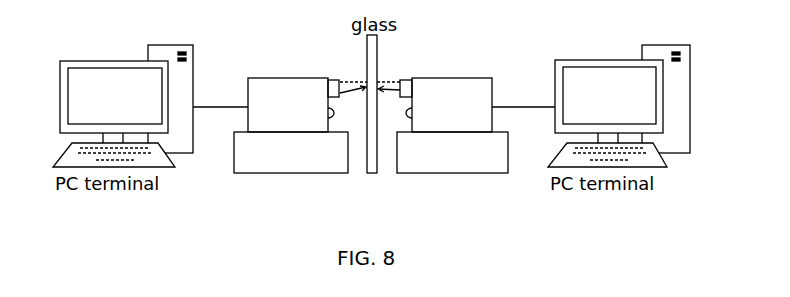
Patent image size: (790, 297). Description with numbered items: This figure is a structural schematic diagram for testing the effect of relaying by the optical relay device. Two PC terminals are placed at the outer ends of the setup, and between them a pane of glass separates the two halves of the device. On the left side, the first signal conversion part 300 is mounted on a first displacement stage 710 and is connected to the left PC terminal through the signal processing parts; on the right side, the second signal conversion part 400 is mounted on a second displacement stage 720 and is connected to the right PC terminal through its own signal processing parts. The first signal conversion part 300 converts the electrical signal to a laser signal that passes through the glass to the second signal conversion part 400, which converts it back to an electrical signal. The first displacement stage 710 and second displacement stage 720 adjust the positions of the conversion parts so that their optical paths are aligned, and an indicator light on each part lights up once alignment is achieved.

The first signal conversion part 300 is at (335, 80).
The second signal conversion part 400 is at (407, 80).
The first displacement stage 710 is at (282, 157).
The second displacement stage 720 is at (443, 153).